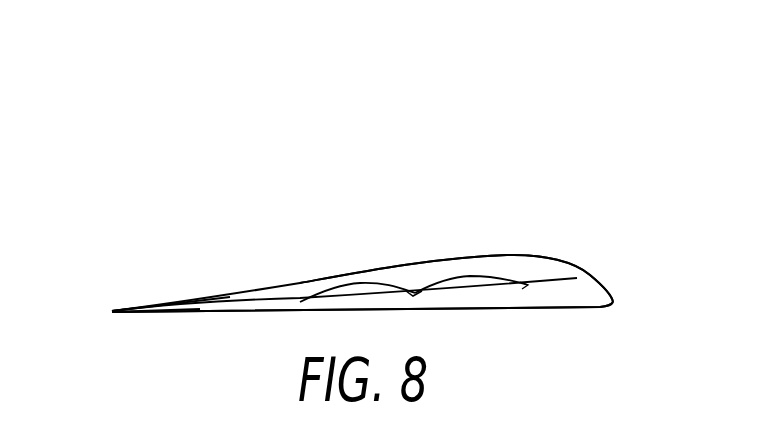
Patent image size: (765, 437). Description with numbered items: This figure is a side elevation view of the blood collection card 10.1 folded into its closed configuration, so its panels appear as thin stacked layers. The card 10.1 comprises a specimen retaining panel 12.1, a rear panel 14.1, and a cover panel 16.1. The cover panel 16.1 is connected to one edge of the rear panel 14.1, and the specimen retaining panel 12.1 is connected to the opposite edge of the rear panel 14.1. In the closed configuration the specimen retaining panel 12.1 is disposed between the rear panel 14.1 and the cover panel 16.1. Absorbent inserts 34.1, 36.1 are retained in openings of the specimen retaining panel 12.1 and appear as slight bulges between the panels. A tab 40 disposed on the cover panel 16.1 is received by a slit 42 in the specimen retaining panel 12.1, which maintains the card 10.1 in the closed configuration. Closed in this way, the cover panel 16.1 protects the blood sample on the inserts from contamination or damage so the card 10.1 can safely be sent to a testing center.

The blood collection card 10.1 is at (190, 144).
The specimen retaining panel 12.1 is at (557, 277).
The rear panel 14.1 is at (498, 308).
The cover panel 16.1 is at (512, 255).
The absorbent insert 34.1 is at (457, 277).
The absorbent insert 36.1 is at (352, 284).
The tab 40 is at (192, 303).
The slit 42 is at (167, 307).